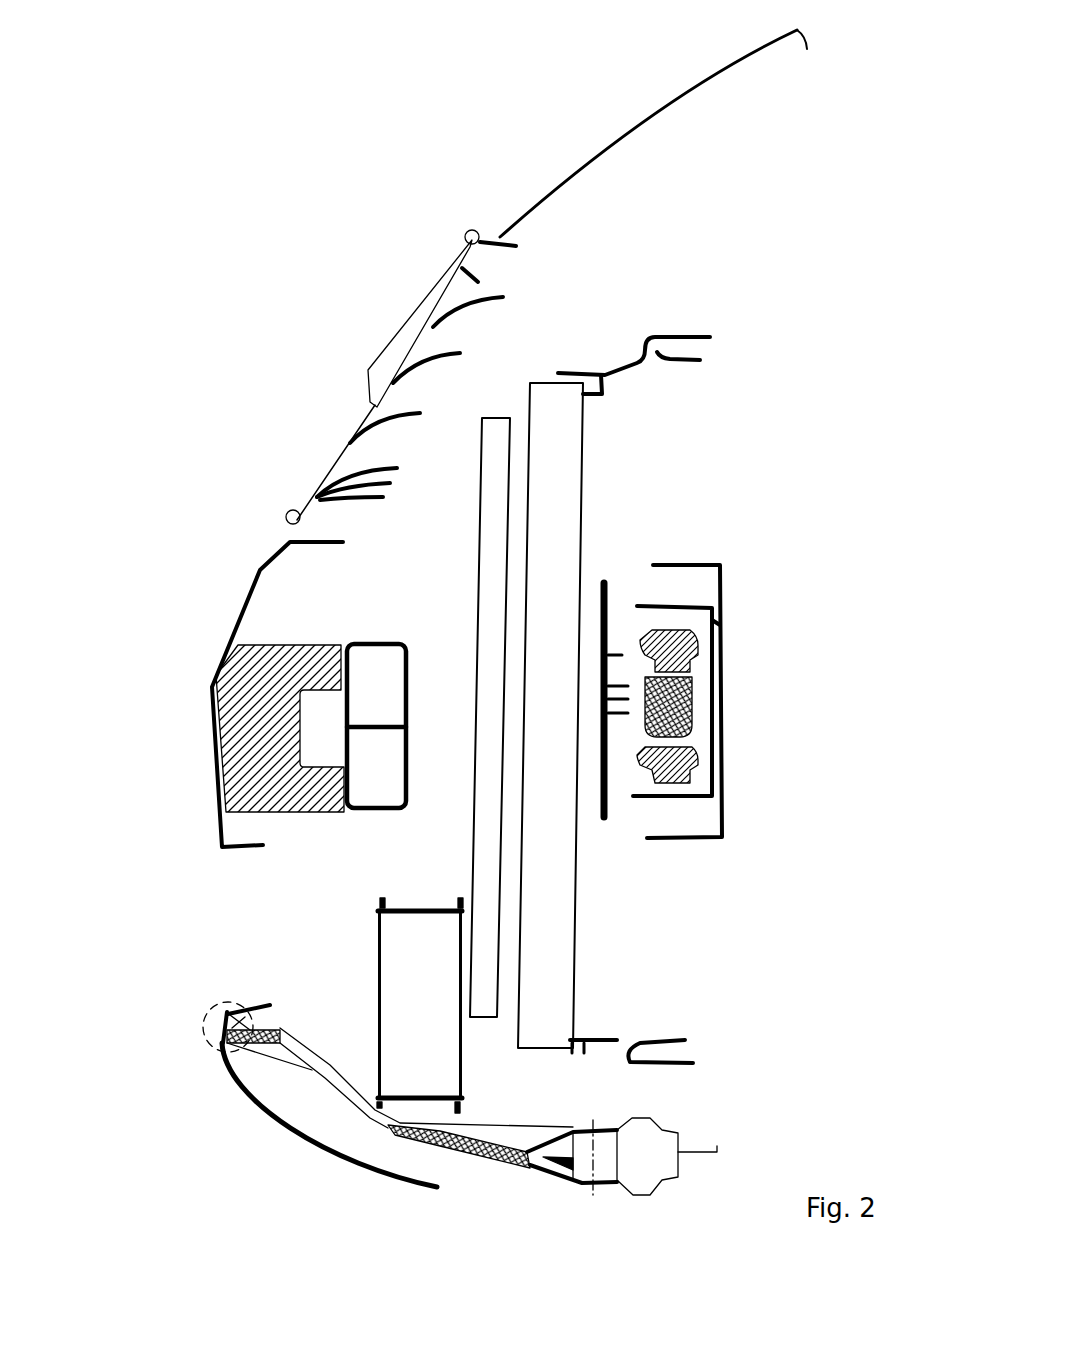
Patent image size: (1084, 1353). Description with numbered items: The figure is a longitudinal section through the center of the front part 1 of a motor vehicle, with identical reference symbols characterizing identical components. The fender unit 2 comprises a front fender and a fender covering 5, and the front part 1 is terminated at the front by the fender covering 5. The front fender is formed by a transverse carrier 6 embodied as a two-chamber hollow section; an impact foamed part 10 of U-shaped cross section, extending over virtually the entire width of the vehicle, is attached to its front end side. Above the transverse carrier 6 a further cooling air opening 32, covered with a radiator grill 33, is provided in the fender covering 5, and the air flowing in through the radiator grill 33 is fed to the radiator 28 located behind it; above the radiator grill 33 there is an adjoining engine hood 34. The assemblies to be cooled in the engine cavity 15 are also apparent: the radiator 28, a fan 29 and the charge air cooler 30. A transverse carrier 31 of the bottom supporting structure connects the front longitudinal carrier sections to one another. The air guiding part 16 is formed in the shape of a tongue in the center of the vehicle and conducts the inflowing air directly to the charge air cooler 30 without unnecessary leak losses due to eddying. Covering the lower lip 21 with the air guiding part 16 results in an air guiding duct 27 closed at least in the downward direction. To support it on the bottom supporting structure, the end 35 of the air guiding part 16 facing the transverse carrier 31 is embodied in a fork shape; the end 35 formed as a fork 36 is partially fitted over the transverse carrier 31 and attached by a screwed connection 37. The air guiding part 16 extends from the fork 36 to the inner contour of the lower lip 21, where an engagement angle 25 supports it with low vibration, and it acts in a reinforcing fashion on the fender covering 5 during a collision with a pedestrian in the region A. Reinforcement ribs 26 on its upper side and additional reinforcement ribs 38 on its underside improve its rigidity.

The front part 1 is at (250, 306).
The fender unit 2 is at (226, 562).
The fender covering 5 is at (248, 597).
The transverse carrier 6 is at (397, 783).
The impact foamed part 10 is at (248, 710).
The engine cavity 15 is at (798, 608).
The air guiding part 16 is at (315, 1053).
The lower lip 21 is at (267, 1123).
The engagement angle 25 is at (243, 1010).
The reinforcement ribs 26 is at (533, 1123).
The air guiding duct 27 is at (295, 935).
The radiator 28 is at (493, 498).
The fan 29 is at (673, 710).
The charge air cooler 30 is at (390, 977).
The transverse carrier 31 is at (694, 1126).
The cooling air opening 32 is at (353, 457).
The radiator grill 33 is at (402, 320).
The engine hood 34 is at (643, 120).
The end 35 is at (540, 1187).
The fork 36 is at (613, 1183).
The screwed connection 37 is at (593, 1195).
The reinforcement ribs 38 is at (282, 1052).
The region A is at (215, 1002).